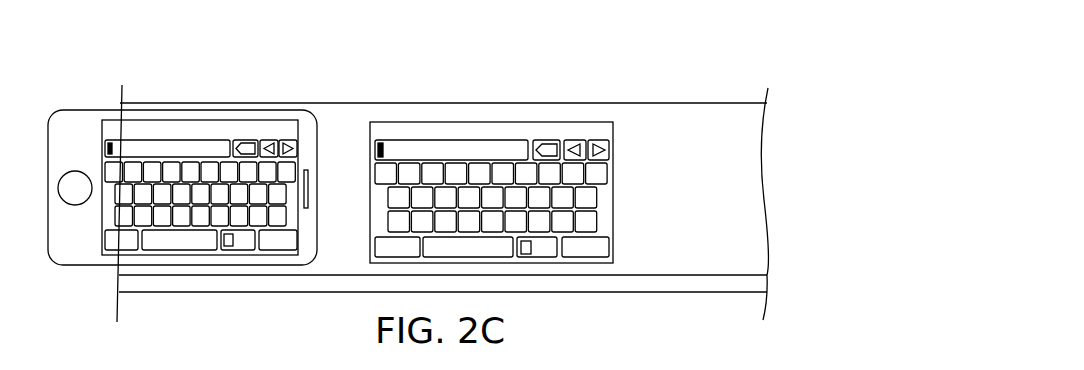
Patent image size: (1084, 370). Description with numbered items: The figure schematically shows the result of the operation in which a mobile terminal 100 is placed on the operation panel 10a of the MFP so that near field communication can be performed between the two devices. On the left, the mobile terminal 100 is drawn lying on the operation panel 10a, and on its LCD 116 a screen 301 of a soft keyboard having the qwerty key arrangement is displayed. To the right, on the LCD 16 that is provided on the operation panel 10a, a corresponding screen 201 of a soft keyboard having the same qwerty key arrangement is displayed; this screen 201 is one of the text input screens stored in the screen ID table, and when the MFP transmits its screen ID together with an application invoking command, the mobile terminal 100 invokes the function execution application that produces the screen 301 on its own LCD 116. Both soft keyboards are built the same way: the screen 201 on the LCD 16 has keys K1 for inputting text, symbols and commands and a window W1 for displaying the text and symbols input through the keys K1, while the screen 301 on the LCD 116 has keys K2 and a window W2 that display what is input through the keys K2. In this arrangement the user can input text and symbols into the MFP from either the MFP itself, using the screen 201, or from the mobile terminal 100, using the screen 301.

The operation panel 10a is at (452, 168).
The mobile terminal 100 is at (199, 154).
The LCD 116 is at (226, 149).
The screen 301 is at (227, 148).
The window W2 is at (167, 110).
The keys K2 is at (227, 196).
The LCD 16 is at (511, 156).
The screen 201 is at (513, 153).
The window W1 is at (451, 112).
The keys K1 is at (513, 197).